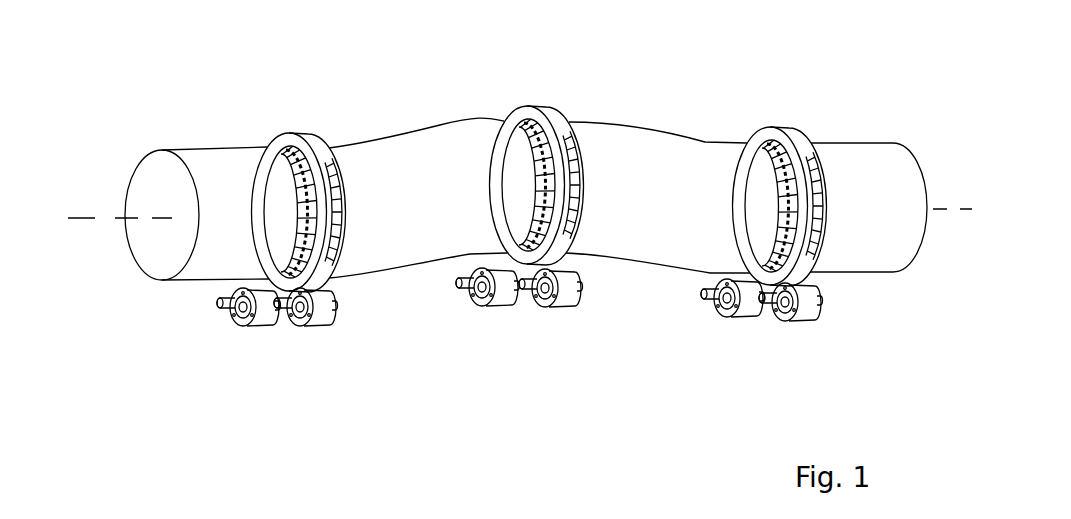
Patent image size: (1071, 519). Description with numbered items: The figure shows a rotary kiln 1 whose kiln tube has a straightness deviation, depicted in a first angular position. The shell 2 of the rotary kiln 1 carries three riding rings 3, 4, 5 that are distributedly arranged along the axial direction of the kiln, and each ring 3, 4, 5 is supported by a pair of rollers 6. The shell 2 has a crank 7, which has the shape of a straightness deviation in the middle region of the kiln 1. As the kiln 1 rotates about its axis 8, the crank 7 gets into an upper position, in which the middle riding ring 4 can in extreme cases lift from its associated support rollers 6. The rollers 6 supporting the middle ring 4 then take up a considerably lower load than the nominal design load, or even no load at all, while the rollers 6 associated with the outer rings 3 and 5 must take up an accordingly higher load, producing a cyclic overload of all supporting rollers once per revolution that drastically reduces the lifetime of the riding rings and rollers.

The rotary kiln 1 is at (243, 68).
The shell 2 is at (863, 142).
The riding ring 3 is at (300, 140).
The riding ring 4 is at (545, 113).
The riding ring 5 is at (787, 138).
The rollers 6 is at (520, 324).
The crank 7 is at (483, 80).
The axis 8 is at (83, 218).